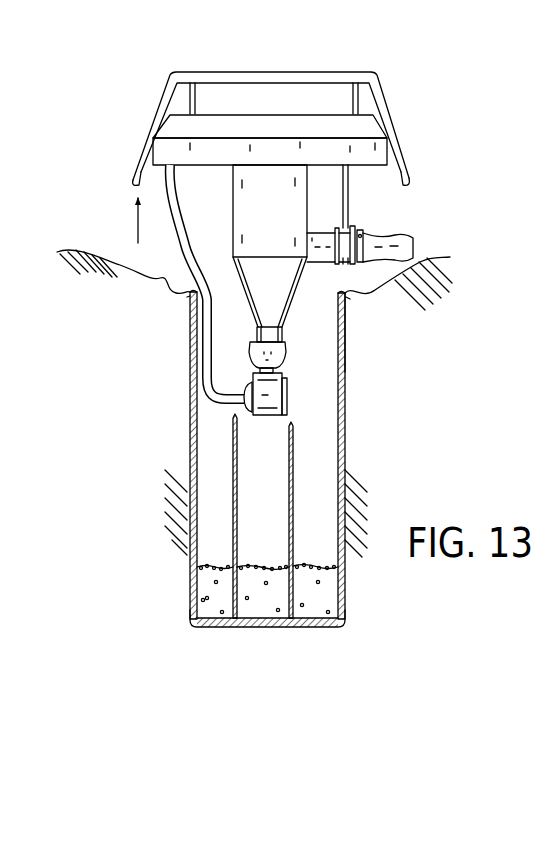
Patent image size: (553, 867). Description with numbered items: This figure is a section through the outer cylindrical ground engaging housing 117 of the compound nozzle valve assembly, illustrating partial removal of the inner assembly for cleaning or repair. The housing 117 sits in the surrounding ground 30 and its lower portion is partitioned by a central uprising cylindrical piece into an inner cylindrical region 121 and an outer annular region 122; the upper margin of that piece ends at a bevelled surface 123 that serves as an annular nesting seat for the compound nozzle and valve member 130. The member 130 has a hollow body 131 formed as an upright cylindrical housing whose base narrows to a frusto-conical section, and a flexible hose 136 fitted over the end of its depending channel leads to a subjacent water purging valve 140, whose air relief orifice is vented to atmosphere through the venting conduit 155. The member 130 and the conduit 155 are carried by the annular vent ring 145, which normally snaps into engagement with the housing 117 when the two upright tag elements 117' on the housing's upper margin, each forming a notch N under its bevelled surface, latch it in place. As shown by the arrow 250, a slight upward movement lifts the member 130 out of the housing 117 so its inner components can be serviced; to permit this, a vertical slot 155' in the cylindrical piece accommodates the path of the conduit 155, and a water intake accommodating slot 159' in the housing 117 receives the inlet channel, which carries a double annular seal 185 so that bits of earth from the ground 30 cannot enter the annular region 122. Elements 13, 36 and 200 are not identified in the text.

The protective frame/cage 200 is at (300, 72).
The annular vent ring 145 is at (374, 131).
The hollow body 131 is at (284, 215).
The compound nozzle and valve member 130 is at (314, 195).
The supply pipe/hose 13 is at (421, 230).
The double annular seal 185 is at (406, 212).
The arrow 250 is at (122, 209).
The ground surface 36 is at (160, 277).
The ground engaging housing 117 is at (301, 459).
The tag elements 117' is at (287, 312).
The notch N is at (187, 298).
The housing slot 159' is at (378, 343).
The venting conduit 155 is at (183, 282).
The flexible hose 136 is at (280, 352).
The water purging valve 140 is at (288, 400).
The bevelled surface 123 is at (233, 422).
The vent channel accommodating slot 155' is at (207, 520).
The outer annular region 122 is at (227, 513).
The inner cylindrical region 121 is at (273, 513).
The surrounding ground 30 is at (138, 540).